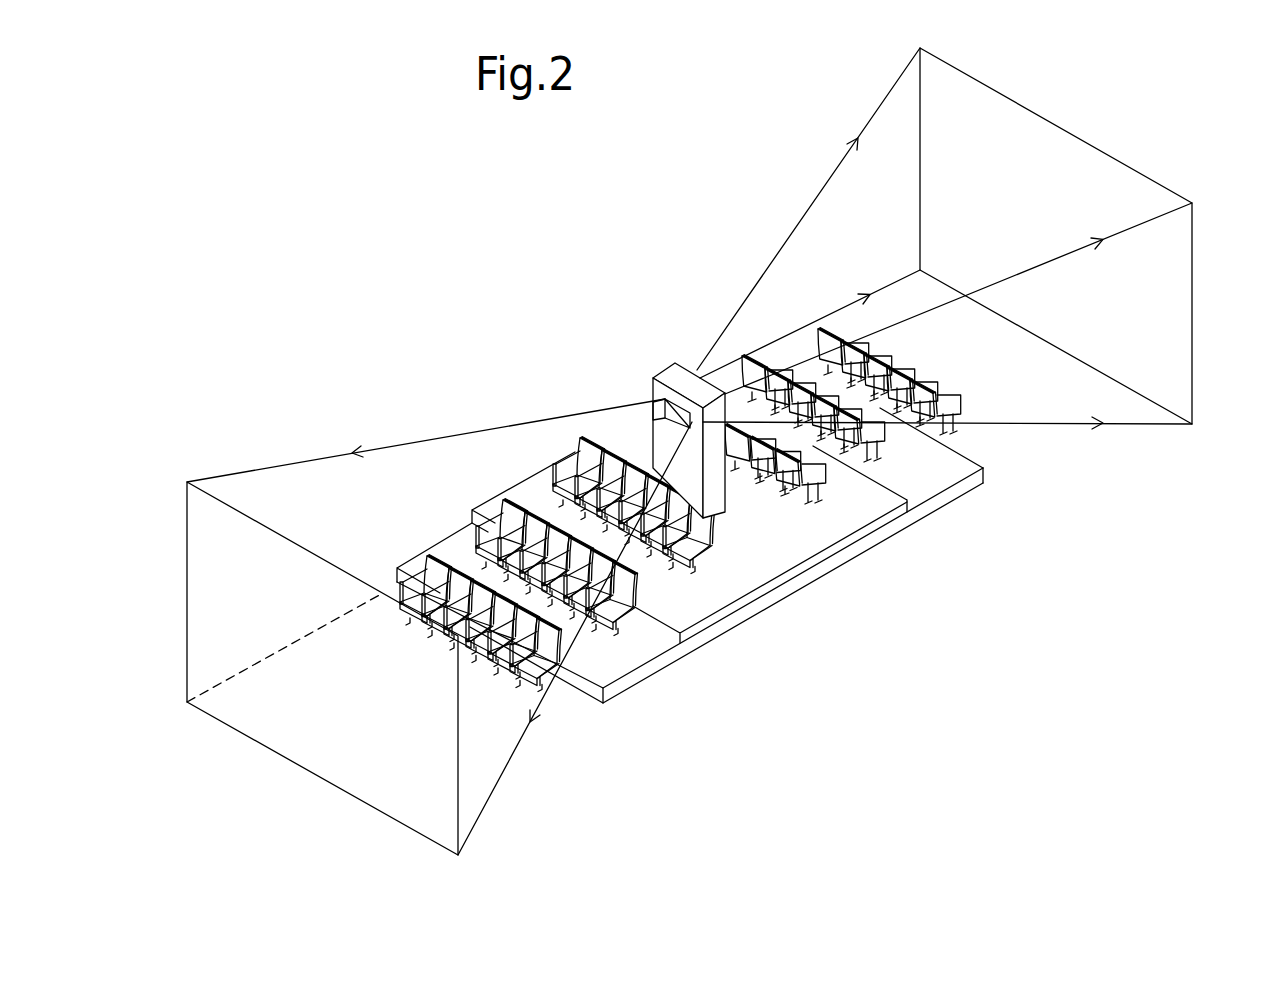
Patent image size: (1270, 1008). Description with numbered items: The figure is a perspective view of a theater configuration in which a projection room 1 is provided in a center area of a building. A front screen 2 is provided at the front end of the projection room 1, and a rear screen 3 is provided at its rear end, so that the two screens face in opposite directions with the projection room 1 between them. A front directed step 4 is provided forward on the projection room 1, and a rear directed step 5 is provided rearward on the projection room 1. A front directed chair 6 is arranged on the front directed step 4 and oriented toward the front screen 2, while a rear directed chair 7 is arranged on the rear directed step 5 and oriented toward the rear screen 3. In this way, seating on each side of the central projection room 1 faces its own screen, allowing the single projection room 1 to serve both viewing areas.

The projection room 1 is at (667, 373).
The front screen 2 is at (418, 822).
The rear screen 3 is at (1186, 352).
The front directed step 4 is at (678, 633).
The rear directed step 5 is at (907, 503).
The front directed chair 6 is at (550, 678).
The rear directed chair 7 is at (820, 487).